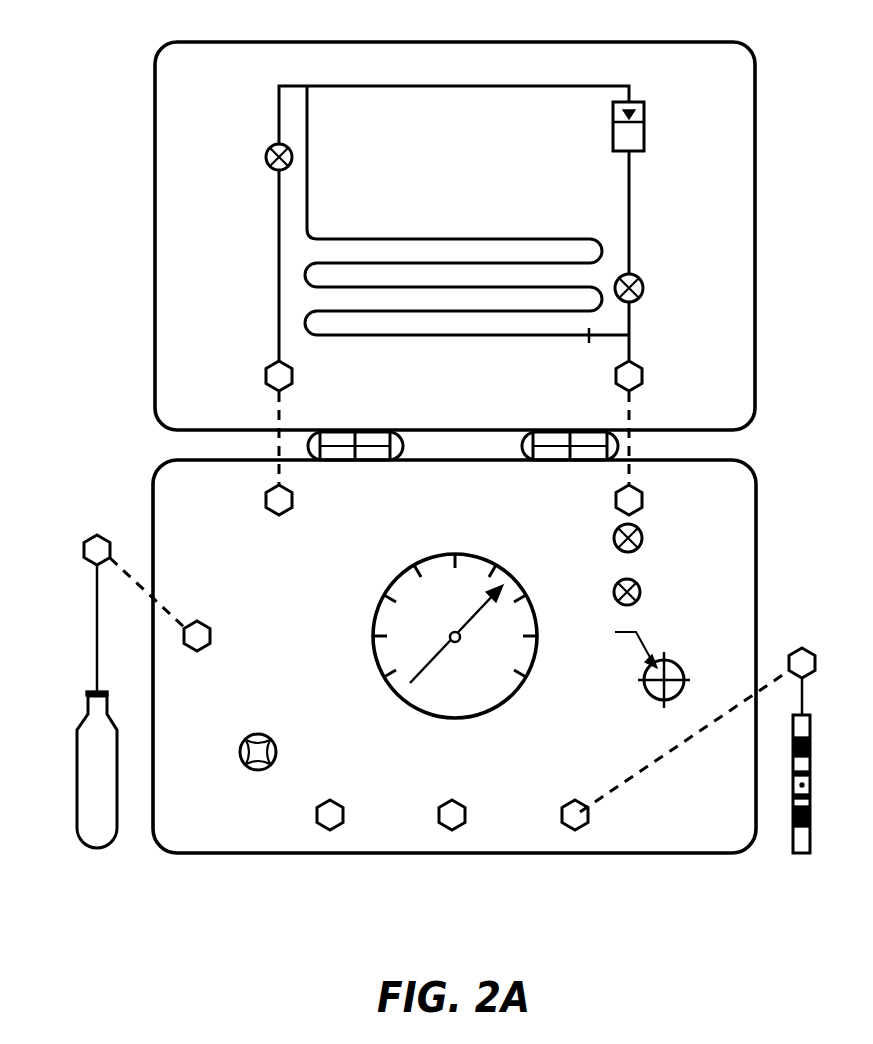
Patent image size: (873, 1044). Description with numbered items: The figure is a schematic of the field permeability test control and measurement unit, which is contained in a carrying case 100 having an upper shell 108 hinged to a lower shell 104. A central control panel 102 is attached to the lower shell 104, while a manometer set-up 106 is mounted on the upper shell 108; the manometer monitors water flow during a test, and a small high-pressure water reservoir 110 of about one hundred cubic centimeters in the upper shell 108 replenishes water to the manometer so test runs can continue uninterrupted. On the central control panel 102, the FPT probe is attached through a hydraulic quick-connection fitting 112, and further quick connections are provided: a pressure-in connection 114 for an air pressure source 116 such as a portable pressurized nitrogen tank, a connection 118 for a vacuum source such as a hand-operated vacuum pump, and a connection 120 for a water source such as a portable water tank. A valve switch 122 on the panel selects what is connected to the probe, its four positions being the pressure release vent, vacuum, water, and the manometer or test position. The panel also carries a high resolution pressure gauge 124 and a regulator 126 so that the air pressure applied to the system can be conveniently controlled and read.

The carrying case 100 is at (768, 66).
The central control panel 102 is at (727, 490).
The lower shell 104 is at (756, 546).
The manometer set-up 106 is at (507, 186).
The upper shell 108 is at (154, 316).
The high-pressure water reservoir 110 is at (644, 125).
The hydraulic quick-connection fitting 112 is at (643, 376).
The quick connection for air pressure source 114 is at (190, 651).
The air pressure source 116 is at (77, 752).
The quick connection for vacuum source 118 is at (463, 808).
The quick connection for water source 120 is at (343, 808).
The valve switch 122 is at (646, 682).
The pressure gauge 124 is at (380, 668).
The regulator 126 is at (279, 746).